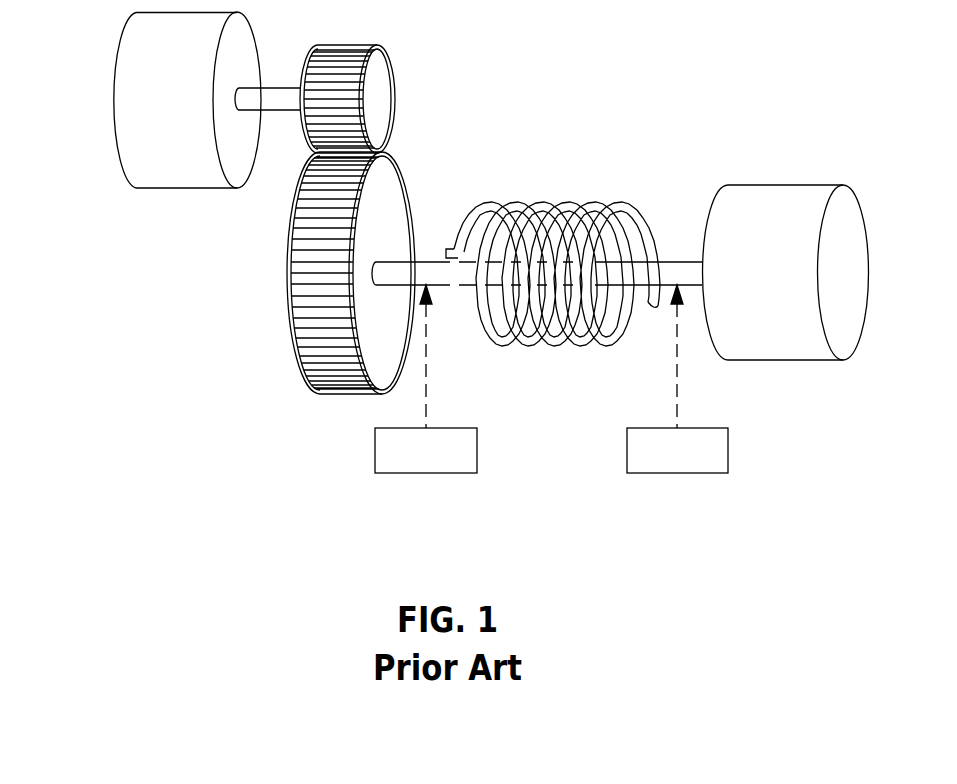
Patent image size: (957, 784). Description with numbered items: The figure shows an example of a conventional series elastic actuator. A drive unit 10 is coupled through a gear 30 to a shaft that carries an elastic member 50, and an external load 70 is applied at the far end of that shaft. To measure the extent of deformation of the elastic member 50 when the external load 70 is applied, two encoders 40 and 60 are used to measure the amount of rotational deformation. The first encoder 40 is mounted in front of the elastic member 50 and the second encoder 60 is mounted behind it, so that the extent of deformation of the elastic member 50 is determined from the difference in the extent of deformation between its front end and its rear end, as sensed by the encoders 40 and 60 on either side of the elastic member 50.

The motor 10 is at (112, 128).
The gear 30 is at (292, 340).
The encoder 40 is at (375, 452).
The elastic member 50 is at (566, 202).
The encoder 60 is at (627, 452).
The external load 70 is at (758, 185).